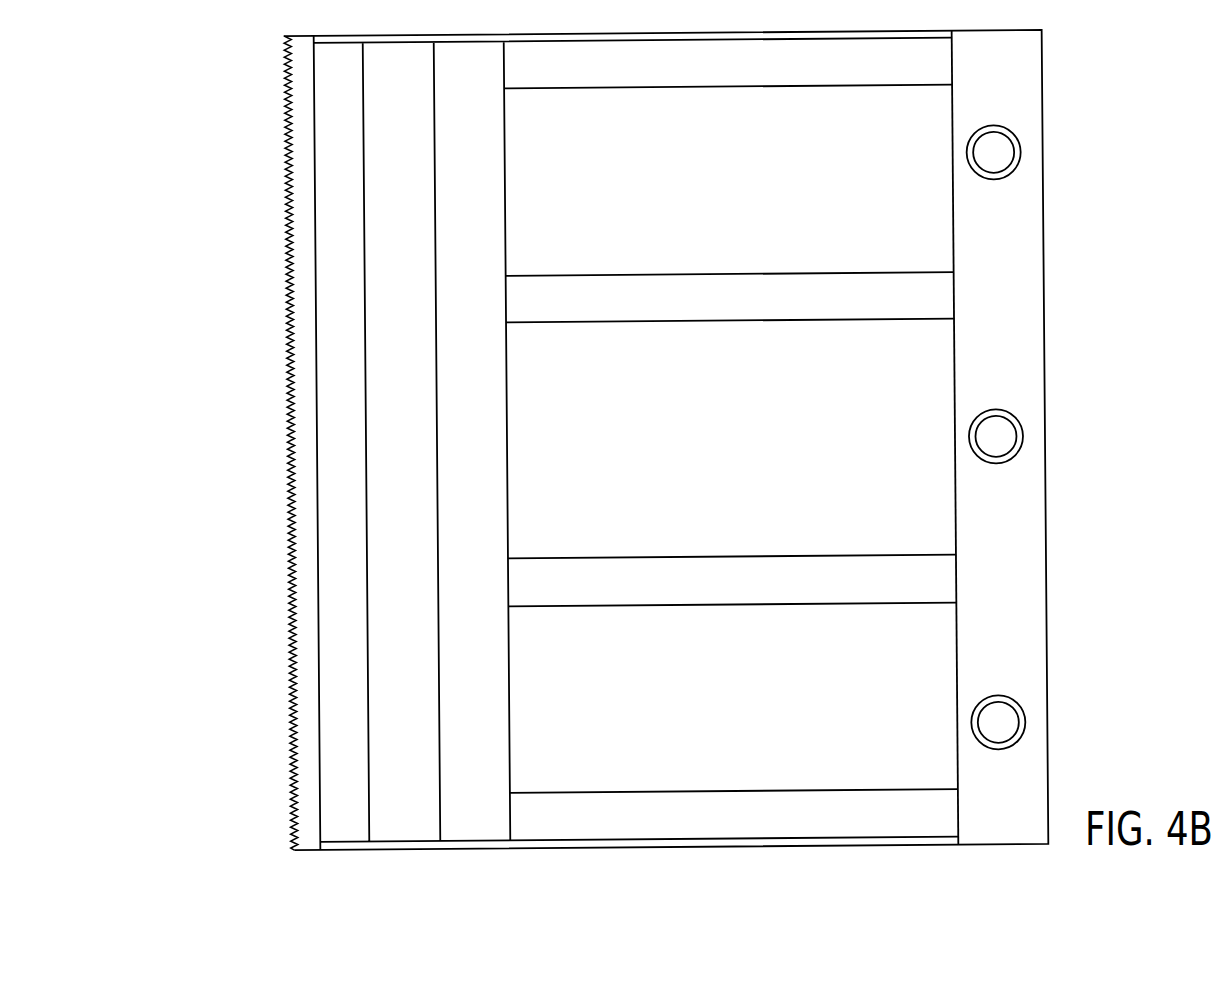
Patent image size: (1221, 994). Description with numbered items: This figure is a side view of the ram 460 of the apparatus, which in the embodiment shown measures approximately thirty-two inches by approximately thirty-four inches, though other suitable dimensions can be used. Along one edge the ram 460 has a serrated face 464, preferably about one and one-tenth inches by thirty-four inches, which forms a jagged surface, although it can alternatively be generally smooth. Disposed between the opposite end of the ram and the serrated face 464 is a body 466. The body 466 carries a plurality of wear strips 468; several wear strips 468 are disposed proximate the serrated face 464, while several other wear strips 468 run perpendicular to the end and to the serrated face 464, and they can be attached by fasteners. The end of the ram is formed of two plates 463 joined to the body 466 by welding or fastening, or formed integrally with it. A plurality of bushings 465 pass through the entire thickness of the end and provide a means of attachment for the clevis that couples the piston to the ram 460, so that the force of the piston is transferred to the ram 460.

The ram 460 is at (1118, 174).
The plates 463 is at (1017, 295).
The serrated face 464 is at (285, 88).
The bushings 465 is at (995, 152).
The body 466 is at (890, 224).
The wear strips 468 is at (643, 62).